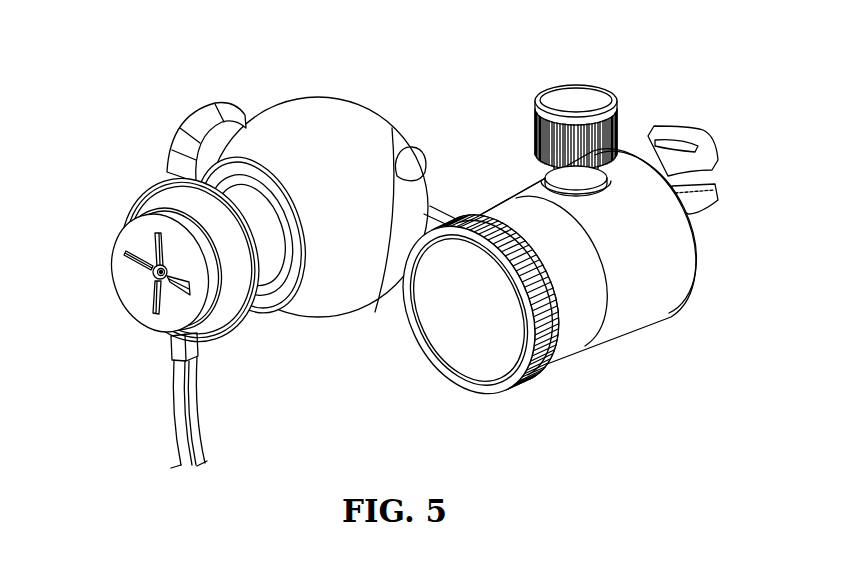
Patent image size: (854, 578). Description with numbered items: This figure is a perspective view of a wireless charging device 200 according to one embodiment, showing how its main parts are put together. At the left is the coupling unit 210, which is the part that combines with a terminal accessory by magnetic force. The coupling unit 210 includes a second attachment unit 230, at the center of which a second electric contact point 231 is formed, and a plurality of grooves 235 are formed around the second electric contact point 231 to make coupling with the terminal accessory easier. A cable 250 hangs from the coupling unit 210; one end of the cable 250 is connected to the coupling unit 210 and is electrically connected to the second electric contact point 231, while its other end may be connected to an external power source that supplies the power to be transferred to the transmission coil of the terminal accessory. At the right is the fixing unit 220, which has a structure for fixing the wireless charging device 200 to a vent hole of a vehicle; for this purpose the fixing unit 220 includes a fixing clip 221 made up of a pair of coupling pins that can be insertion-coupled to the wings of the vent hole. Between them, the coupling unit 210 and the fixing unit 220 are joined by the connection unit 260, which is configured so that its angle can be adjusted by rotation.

The wireless charging device 200 is at (94, 31).
The coupling unit 210 is at (155, 183).
The fixing unit 220 is at (622, 322).
The fixing clip 221 is at (700, 140).
The second attachment unit 230 is at (140, 304).
The second electric contact point 231 is at (156, 275).
The grooves 235 is at (160, 242).
The cable 250 is at (175, 405).
The connection unit 260 is at (302, 113).